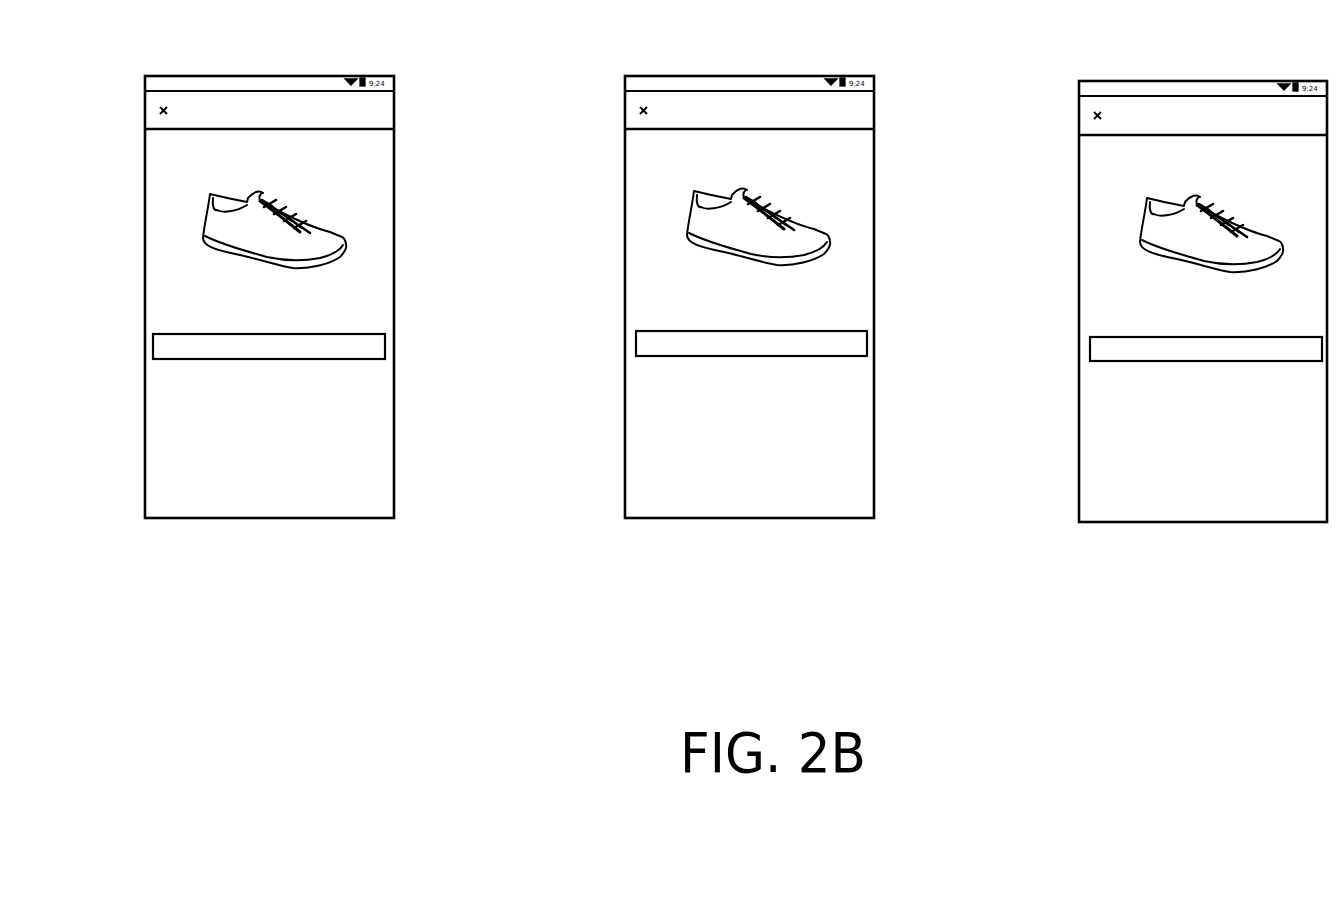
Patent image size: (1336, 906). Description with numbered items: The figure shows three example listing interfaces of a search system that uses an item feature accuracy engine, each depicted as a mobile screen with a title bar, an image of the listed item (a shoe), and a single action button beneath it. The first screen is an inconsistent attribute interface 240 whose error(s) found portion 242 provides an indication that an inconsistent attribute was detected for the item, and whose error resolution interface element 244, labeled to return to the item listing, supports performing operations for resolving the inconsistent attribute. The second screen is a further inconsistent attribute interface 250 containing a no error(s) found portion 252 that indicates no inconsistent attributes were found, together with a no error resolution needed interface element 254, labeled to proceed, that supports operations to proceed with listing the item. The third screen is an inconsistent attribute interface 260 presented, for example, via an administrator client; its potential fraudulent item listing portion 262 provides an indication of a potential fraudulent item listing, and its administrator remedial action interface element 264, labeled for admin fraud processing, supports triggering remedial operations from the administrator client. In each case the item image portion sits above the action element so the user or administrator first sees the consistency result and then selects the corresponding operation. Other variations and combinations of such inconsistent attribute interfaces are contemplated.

The inconsistent attribute interface 240 is at (186, 76).
The error(s) found portion 242 is at (180, 223).
The interface element 244 is at (233, 360).
The no error(s) found user interface screen 250 is at (666, 76).
The no error(s) found portion 252 is at (662, 220).
The interface element 254 is at (716, 357).
The inconsistent attribute interface 260 is at (1120, 81).
The potential fraudulent item listing portion 262 is at (1115, 225).
The admin fraud processing button 264 is at (1170, 362).